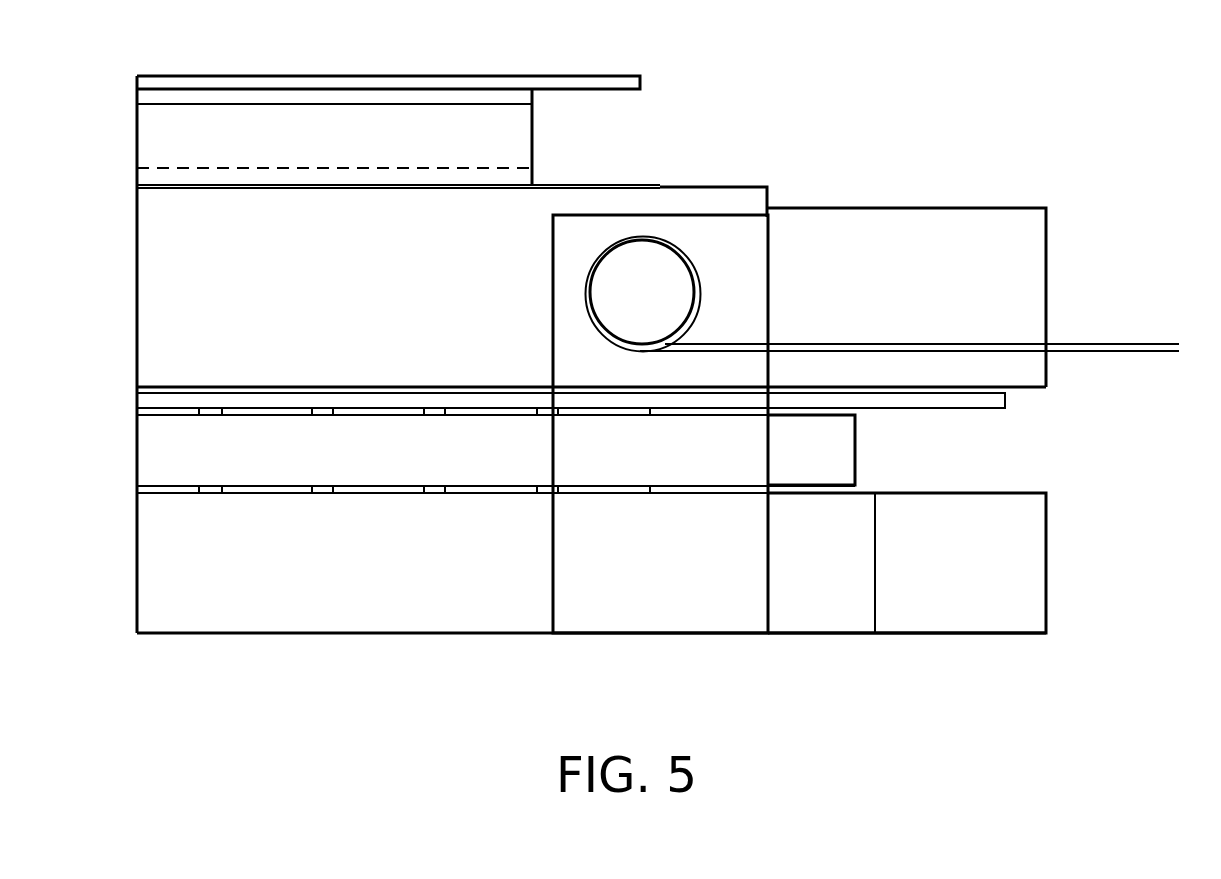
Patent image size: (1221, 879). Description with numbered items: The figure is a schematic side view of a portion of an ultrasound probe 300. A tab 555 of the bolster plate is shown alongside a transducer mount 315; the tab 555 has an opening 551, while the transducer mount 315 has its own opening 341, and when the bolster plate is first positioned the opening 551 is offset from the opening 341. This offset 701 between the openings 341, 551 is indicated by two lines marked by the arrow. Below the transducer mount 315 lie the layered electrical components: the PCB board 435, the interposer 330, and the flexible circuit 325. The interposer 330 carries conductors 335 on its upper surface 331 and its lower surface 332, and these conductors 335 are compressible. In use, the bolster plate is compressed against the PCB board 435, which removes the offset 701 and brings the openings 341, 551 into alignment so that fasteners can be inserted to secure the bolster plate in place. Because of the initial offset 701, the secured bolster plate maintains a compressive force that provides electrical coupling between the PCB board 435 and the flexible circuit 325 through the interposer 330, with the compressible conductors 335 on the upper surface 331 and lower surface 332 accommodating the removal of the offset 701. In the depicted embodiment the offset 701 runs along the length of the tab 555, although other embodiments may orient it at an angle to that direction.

The ultrasound probe 300 is at (1026, 125).
The transducer mount 315 is at (733, 187).
The flexible circuit 325 is at (995, 402).
The interposer 330 is at (855, 448).
The upper surface 331 is at (137, 412).
The lower surface 332 is at (137, 486).
The conductors 335 is at (266, 413).
The opening 341 is at (613, 263).
The PCB board 435 is at (1038, 537).
The opening 551 is at (612, 340).
The tab 555 is at (658, 622).
The offset 701 is at (1147, 343).